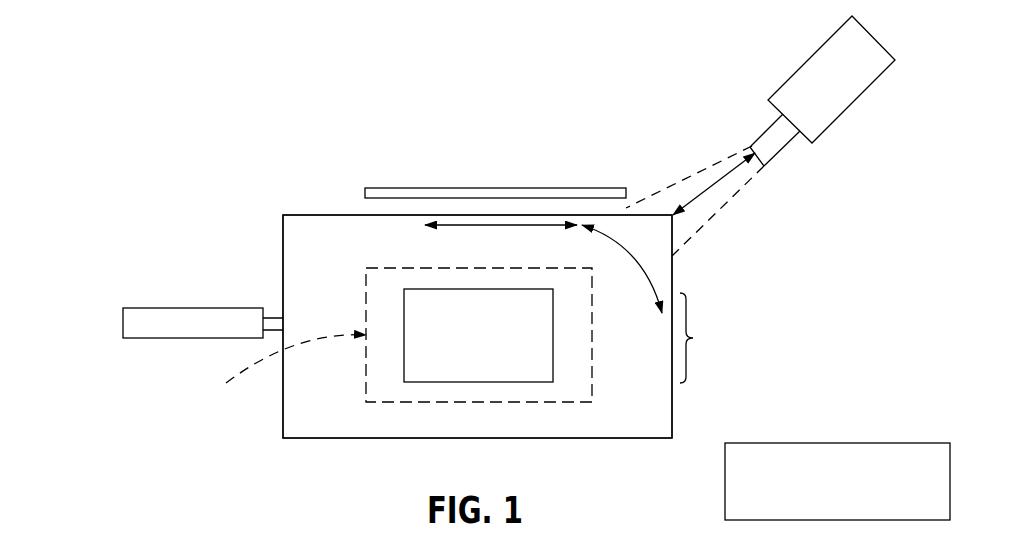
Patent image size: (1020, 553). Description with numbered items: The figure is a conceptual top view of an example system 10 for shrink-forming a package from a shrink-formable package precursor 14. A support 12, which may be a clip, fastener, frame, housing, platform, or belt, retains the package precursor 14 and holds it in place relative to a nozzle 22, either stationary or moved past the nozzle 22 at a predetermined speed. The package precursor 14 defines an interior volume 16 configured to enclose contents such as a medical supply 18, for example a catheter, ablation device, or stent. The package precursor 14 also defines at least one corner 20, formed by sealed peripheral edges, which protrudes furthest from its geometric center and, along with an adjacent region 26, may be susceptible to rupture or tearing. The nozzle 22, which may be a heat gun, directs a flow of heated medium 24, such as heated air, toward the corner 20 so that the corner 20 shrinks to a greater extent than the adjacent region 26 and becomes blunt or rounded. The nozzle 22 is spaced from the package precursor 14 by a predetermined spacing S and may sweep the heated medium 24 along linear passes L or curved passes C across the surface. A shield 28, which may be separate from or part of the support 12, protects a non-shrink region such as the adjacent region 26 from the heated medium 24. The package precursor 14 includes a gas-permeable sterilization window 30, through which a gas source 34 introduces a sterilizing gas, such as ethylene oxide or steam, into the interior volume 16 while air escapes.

The system 10 is at (152, 43).
The support 12 is at (197, 308).
The shrink-formable package precursor 14 is at (320, 215).
The interior volume 16 is at (322, 420).
The medical supply 18 is at (281, 376).
The corner 20 is at (675, 255).
The nozzle 22 is at (827, 128).
The heated medium 24 is at (722, 162).
The adjacent region 26 is at (708, 338).
The shield 28 is at (493, 187).
The sterilization window 30 is at (502, 362).
The gas source 34 is at (933, 496).